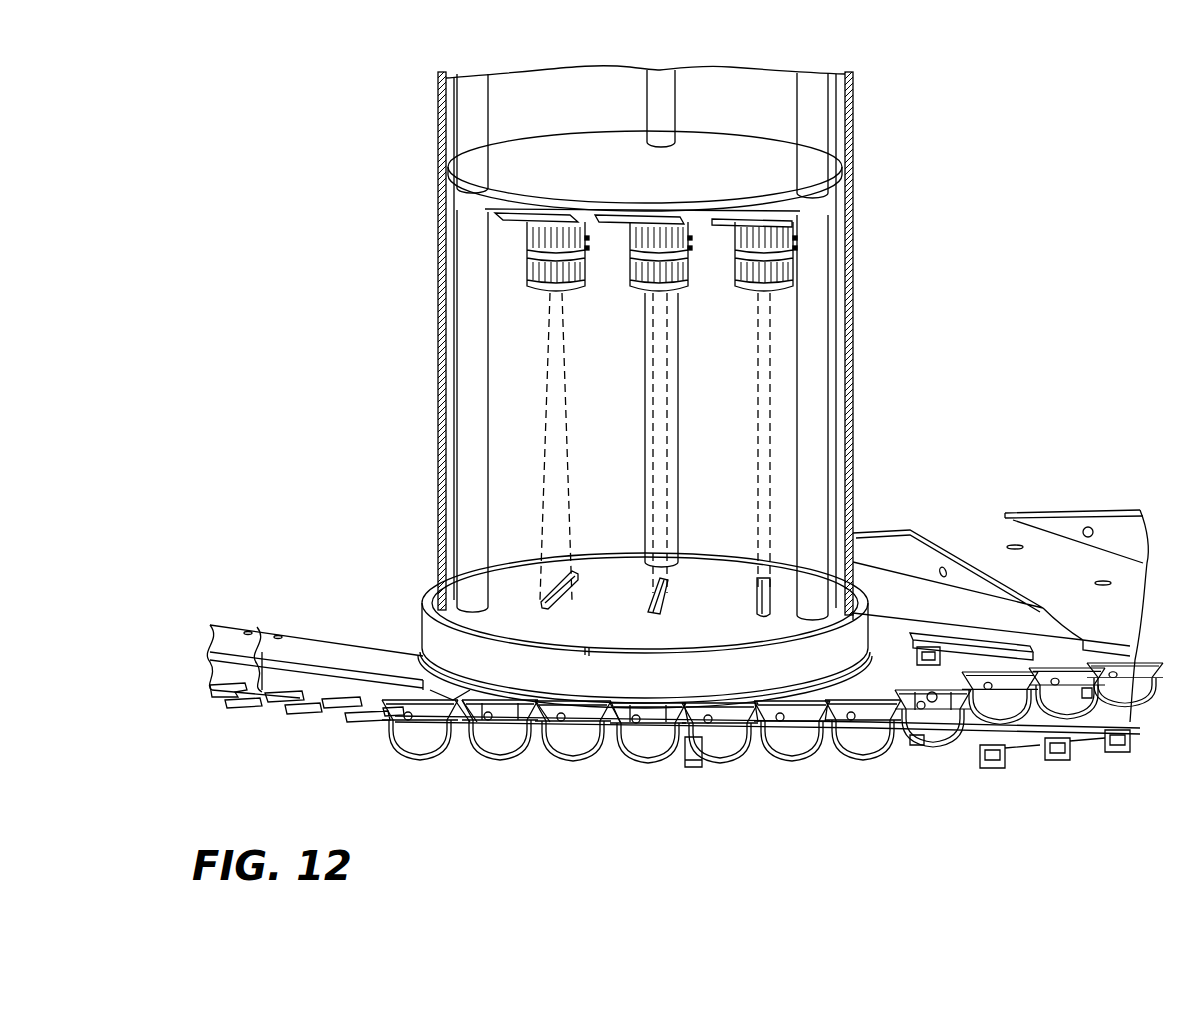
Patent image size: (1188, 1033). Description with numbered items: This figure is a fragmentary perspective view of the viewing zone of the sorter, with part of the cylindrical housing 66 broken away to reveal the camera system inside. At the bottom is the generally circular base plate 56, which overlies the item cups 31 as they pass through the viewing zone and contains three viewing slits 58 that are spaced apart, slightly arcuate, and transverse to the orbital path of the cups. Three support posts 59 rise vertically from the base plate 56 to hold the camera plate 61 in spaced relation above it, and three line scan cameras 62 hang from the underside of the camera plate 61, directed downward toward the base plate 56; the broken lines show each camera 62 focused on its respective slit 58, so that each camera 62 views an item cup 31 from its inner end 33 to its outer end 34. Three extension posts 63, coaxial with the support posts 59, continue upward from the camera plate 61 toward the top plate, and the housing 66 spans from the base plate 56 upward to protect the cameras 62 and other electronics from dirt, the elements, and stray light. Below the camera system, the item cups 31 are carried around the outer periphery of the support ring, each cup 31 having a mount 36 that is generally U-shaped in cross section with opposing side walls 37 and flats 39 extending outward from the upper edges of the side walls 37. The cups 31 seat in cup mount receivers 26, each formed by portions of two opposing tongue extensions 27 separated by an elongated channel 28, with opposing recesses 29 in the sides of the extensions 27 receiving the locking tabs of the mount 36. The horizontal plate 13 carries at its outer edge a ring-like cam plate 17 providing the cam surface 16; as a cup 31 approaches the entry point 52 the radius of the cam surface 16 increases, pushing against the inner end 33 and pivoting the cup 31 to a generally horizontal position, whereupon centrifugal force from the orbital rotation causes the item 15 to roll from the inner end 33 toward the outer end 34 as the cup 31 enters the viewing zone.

The horizontal plate 13 is at (995, 470).
The item 15 is at (435, 712).
The cam surface 16 is at (342, 670).
The cam plate 17 is at (290, 647).
The cup mount receiver 26 is at (270, 715).
The tongue extension 27 is at (303, 720).
The channel 28 is at (215, 699).
The recess 29 is at (262, 660).
The item cup 31 is at (496, 760).
The inner end 33 is at (453, 690).
The outer end 34 is at (650, 743).
The mount 36 is at (1002, 755).
The side wall 37 is at (1070, 737).
The flat 39 is at (1110, 737).
The entry point 52 is at (909, 595).
The base plate 56 is at (420, 601).
The viewing slit 58 is at (575, 572).
The support post 59 is at (470, 245).
The camera plate 61 is at (511, 178).
The line scan camera 62 is at (586, 291).
The extension post 63 is at (476, 105).
The cylindrical housing 66 is at (434, 320).